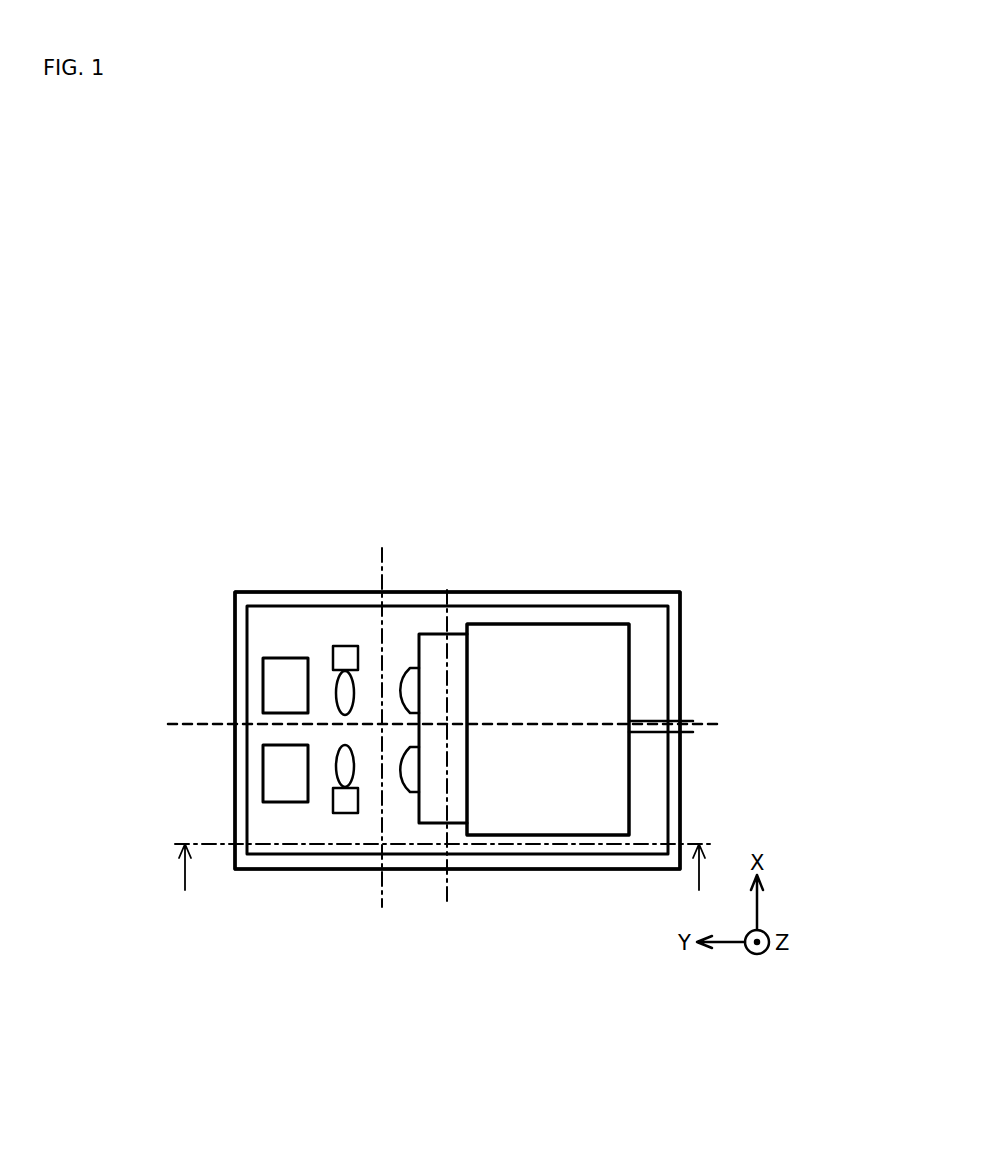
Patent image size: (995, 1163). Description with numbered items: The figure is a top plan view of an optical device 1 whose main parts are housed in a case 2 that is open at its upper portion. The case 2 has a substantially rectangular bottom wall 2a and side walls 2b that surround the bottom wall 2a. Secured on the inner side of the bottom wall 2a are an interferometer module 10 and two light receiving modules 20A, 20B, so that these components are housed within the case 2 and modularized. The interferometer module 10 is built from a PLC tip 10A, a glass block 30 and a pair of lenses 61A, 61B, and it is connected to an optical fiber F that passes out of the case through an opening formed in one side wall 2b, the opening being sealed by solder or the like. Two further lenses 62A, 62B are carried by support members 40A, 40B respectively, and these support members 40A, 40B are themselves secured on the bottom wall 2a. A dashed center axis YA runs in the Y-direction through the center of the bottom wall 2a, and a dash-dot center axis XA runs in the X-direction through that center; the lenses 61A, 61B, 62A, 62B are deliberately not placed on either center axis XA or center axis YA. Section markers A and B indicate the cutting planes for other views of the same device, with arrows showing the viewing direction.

The optical device 1 is at (537, 525).
The case 2 is at (531, 869).
The bottom wall 2a is at (655, 783).
The side walls 2b is at (597, 594).
The interferometer module 10 is at (630, 689).
The PLC tip 10A is at (557, 652).
The light receiving module 20A is at (262, 795).
The light receiving module 20B is at (262, 667).
The glass block 30 is at (450, 647).
The support member 40A is at (342, 800).
The support member 40B is at (343, 655).
The lens 61A is at (410, 785).
The lens 61B is at (409, 672).
The lens 62A is at (345, 770).
The lens 62B is at (350, 693).
The optical fiber F is at (680, 732).
The center axis XA is at (447, 880).
The center axis YA is at (212, 722).
The section line A- A is at (442, 882).
The section line B- B is at (395, 568).